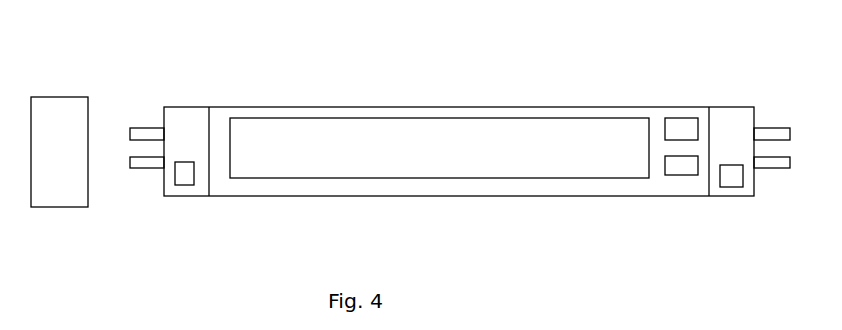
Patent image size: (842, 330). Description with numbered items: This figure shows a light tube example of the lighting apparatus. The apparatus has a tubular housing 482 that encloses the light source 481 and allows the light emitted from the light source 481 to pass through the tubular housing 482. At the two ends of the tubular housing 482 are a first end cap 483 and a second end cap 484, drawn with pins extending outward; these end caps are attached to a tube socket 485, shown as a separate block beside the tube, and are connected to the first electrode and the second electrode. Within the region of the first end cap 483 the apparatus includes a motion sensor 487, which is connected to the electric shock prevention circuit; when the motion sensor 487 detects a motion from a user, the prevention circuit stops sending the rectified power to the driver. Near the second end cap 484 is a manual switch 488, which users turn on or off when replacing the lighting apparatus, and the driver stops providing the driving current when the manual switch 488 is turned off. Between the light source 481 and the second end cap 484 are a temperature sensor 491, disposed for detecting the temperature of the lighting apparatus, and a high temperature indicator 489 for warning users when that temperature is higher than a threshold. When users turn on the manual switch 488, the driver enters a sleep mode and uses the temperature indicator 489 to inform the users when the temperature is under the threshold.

The light source 481 is at (455, 157).
The tubular housing 482 is at (603, 107).
The first end cap 483 is at (193, 117).
The second end cap 484 is at (727, 123).
The tube socket 485 is at (59, 107).
The motion sensor 487 is at (186, 180).
The manual switch 488 is at (737, 178).
The high temperature indicator 489 is at (687, 170).
The temperature sensor 491 is at (678, 133).